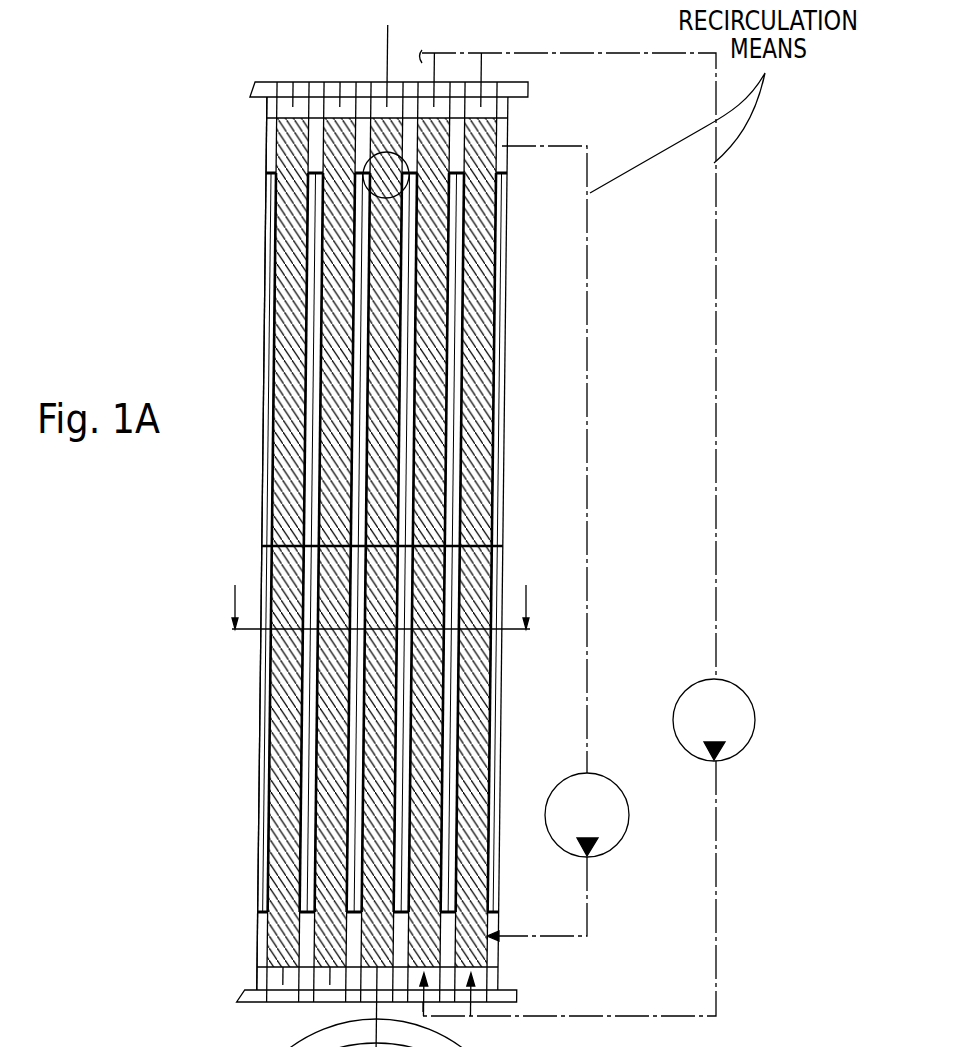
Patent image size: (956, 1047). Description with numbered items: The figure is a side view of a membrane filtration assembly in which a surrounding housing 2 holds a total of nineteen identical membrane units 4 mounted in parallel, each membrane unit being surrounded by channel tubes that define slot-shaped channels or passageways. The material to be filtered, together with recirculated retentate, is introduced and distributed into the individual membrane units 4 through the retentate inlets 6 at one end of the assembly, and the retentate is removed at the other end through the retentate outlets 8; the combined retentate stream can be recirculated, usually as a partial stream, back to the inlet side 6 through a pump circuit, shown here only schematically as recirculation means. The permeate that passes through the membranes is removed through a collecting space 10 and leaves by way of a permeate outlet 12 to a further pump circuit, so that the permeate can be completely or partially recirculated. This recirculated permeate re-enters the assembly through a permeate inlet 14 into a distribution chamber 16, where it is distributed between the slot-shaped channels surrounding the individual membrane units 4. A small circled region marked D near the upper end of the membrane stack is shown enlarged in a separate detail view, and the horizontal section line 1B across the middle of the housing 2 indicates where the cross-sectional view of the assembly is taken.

The housing 2 is at (268, 343).
The membrane units 4 is at (282, 863).
The retentate inlets 6 is at (283, 1003).
The retentate outlets 8 is at (293, 82).
The collecting space 10 is at (313, 157).
The permeate outlet 12 is at (250, 136).
The permeate inlet 14 is at (238, 945).
The distribution chamber 16 is at (302, 937).
The enlarged detail D is at (368, 180).
The cross-sectional view 1B is at (382, 592).